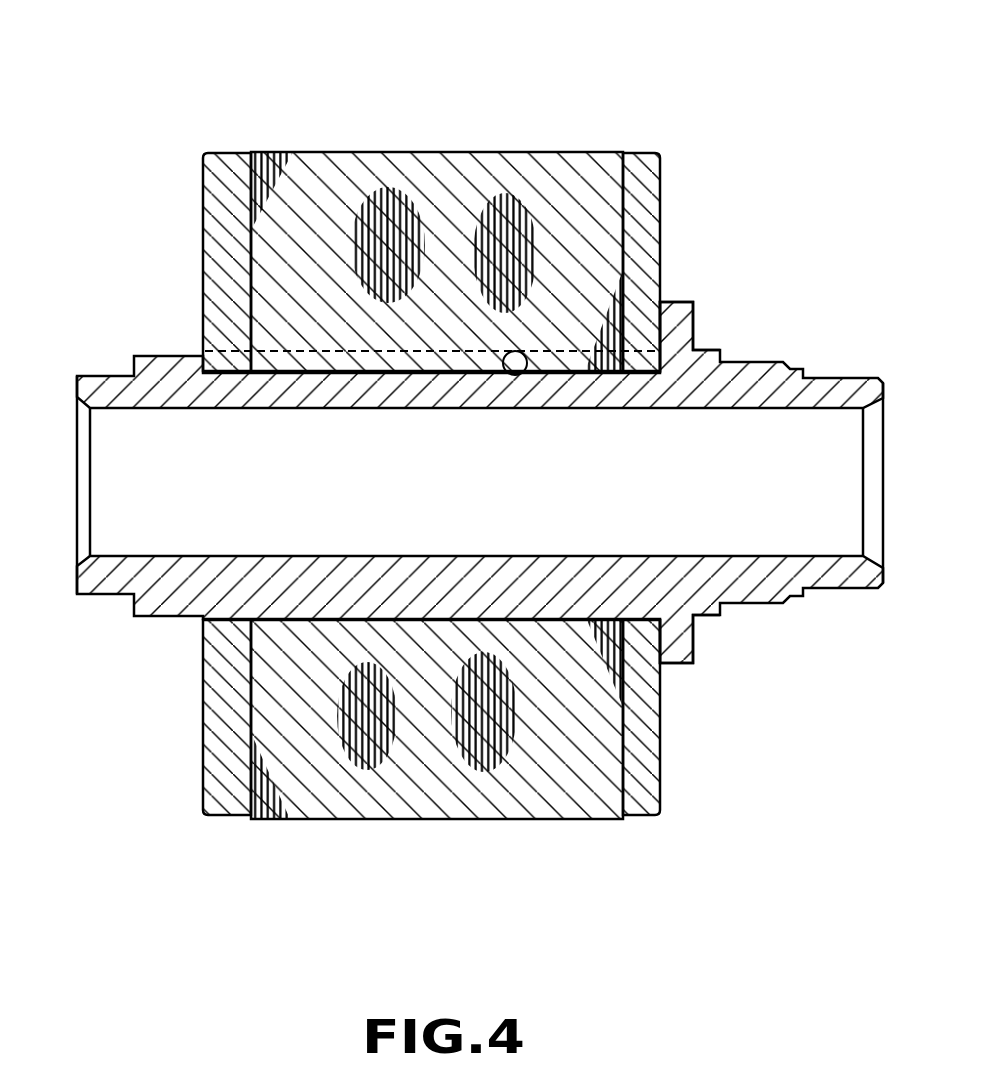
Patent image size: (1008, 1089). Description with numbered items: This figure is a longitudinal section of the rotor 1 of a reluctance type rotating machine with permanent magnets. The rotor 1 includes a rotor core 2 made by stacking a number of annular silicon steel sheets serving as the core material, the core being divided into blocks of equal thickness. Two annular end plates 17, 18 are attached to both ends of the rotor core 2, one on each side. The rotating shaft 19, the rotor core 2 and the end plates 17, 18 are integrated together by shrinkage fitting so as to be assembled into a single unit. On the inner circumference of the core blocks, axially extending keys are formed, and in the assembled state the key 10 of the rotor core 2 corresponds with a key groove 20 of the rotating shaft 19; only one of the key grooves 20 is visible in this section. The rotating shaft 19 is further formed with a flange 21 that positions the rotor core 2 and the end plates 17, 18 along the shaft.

The rotor 1 is at (436, 415).
The rotor core 2 is at (410, 138).
The key 10 is at (334, 372).
The end plate 17 is at (662, 197).
The end plate 18 is at (212, 193).
The rotating shaft 19 is at (850, 390).
The key groove 20 is at (515, 375).
The flange 21 is at (693, 665).